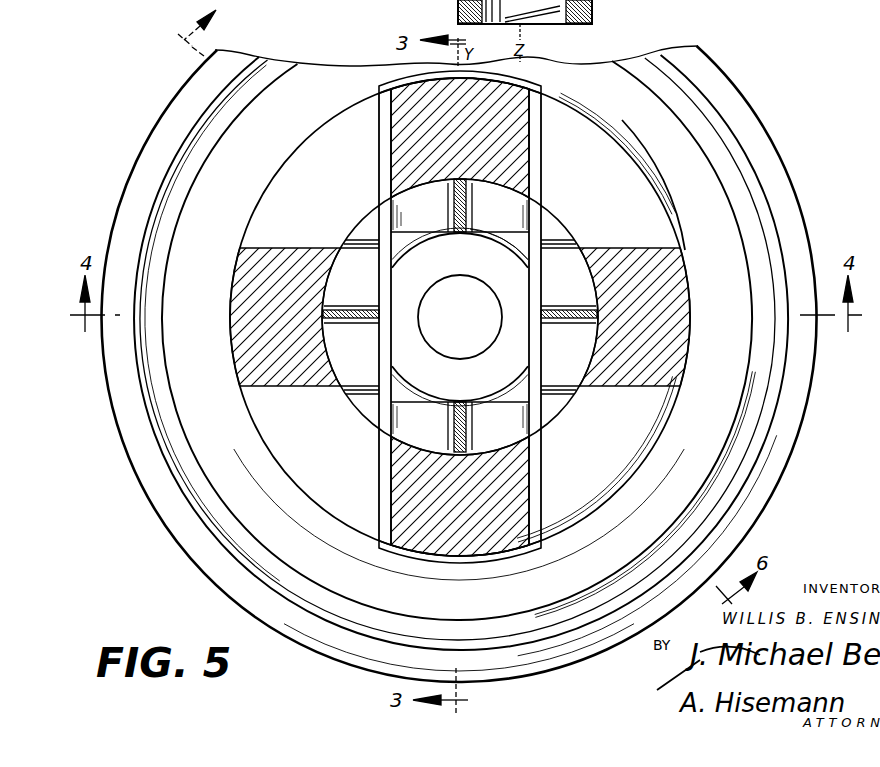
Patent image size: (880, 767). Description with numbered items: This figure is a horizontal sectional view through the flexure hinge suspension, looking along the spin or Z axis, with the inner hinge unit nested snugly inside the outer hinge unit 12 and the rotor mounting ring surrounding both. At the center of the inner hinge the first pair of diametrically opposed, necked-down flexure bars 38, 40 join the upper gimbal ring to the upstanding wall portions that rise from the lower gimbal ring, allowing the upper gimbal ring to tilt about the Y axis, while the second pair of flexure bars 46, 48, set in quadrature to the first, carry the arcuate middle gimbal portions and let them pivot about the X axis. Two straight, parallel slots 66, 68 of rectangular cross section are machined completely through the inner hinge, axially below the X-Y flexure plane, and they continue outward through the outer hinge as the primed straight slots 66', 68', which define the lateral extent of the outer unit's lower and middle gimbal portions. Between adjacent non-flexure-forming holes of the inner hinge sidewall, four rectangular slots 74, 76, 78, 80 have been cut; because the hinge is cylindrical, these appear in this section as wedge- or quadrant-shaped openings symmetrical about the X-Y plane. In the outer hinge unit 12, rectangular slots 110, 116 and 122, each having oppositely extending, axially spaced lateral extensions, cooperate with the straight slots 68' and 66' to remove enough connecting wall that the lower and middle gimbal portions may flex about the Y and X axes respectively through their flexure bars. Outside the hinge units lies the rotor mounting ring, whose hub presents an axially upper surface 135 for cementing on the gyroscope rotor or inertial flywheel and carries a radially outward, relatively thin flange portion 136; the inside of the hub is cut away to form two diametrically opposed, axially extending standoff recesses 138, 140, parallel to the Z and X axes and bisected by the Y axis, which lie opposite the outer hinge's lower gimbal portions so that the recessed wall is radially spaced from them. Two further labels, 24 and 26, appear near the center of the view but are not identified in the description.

The outer hinge unit 12 is at (241, 460).
The hub 24 is at (433, 392).
The central bore 26 is at (460, 317).
The flexure bar 38 is at (452, 427).
The flexure bar 40 is at (465, 194).
The flexure bar 46 is at (357, 308).
The flexure bar 48 is at (574, 312).
The straight parallel slot 66 is at (457, 317).
The straight slot 66' is at (362, 317).
The straight parallel slot 68 is at (502, 260).
The straight slot 68' is at (554, 317).
The rectangular slot 74 is at (366, 408).
The rectangular slot 76 is at (550, 406).
The rectangular slot 78 is at (553, 230).
The rectangular slot 80 is at (376, 232).
The rectangular slot 110 is at (637, 458).
The rectangular slot 116 is at (317, 153).
The rectangular slot 122 is at (633, 170).
The axially upper surface 135 is at (736, 326).
The flange portion 136 is at (748, 430).
The standoff recess 138 is at (425, 558).
The standoff recess 140 is at (541, 88).